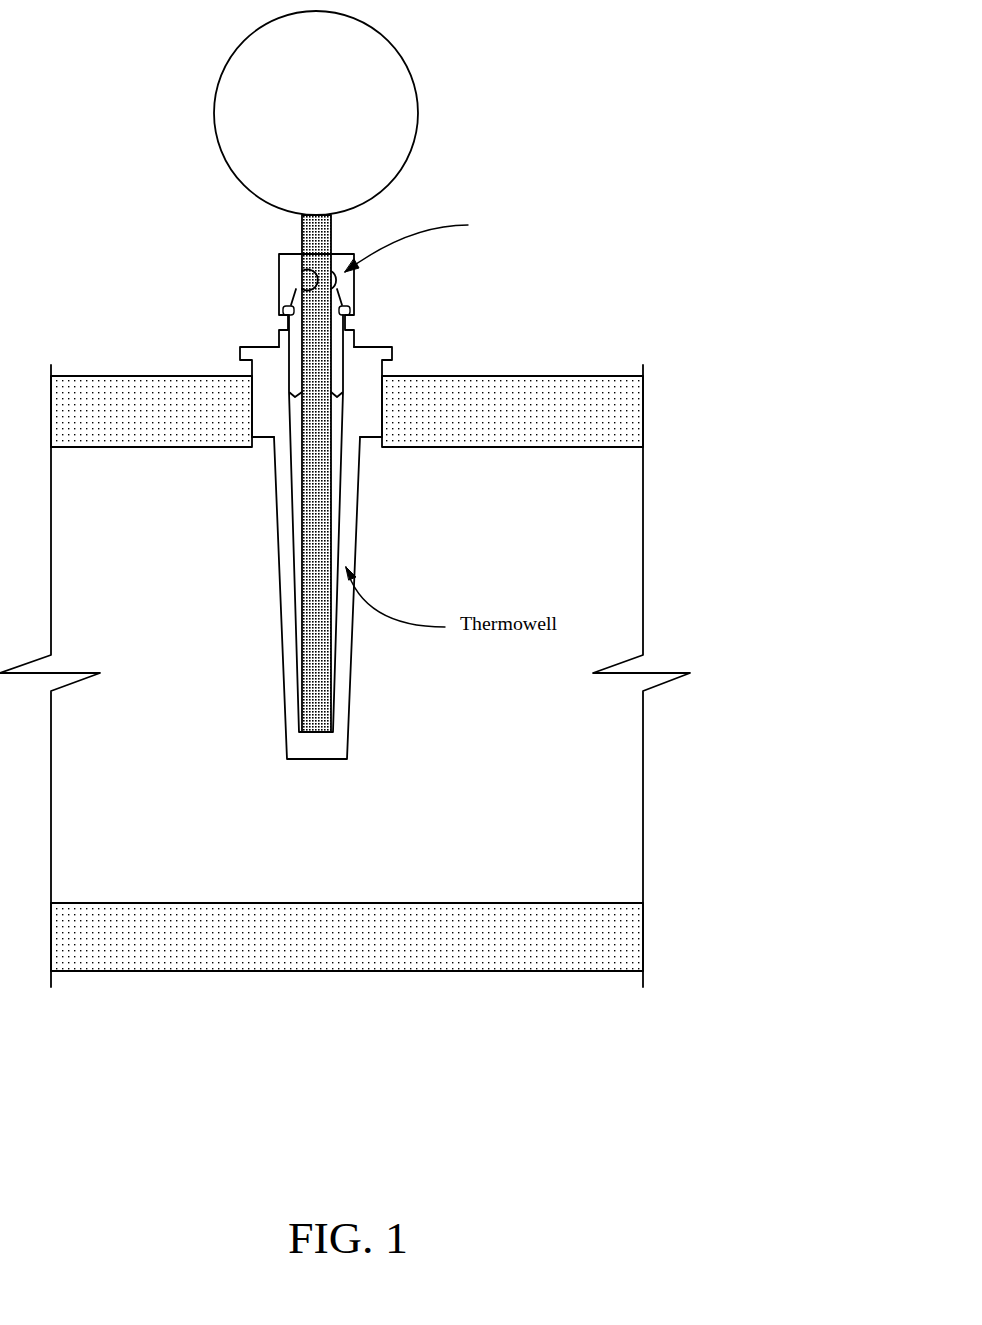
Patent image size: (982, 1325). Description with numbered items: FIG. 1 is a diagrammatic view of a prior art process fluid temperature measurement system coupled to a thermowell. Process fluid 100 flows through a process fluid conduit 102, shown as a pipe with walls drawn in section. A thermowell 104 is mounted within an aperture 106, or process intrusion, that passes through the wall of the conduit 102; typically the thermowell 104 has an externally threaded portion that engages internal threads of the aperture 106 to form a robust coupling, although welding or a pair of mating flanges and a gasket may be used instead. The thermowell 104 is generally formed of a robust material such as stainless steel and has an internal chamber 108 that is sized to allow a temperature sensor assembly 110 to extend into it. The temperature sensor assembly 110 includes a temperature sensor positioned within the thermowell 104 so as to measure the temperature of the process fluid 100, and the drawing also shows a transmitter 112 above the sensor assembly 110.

The process fluid 100 is at (542, 849).
The process fluid conduit 102 is at (530, 971).
The thermowell 104 is at (365, 345).
The aperture 106 is at (382, 380).
The internal chamber 108 is at (300, 480).
The temperature sensor assembly 110 is at (282, 318).
The transmitter 112 is at (400, 55).